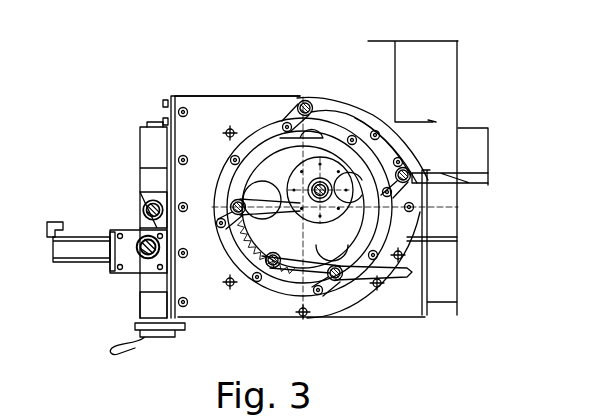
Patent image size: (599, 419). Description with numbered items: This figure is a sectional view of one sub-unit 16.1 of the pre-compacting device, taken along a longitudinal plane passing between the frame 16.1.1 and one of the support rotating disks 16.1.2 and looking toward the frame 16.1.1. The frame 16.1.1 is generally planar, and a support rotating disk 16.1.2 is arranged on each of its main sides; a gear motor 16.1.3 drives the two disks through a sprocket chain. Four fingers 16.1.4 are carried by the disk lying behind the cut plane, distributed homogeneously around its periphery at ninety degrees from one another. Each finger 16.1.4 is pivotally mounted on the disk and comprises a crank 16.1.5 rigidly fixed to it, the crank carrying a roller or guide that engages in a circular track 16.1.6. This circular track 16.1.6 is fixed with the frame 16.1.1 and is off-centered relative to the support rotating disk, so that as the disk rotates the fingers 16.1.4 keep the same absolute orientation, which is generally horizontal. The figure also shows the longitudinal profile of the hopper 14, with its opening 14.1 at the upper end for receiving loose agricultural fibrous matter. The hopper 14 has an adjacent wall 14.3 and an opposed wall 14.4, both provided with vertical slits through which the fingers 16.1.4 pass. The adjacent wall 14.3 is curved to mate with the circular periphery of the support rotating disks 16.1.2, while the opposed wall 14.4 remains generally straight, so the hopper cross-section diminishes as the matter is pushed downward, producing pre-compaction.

The hopper 14 is at (501, 53).
The opening 14.1 is at (427, 41).
The adjacent wall 14.3 is at (391, 79).
The opposed wall 14.4 is at (458, 62).
The sub-unit 16.1 is at (108, 81).
The frame 16.1.1 is at (220, 108).
The support rotating disk 16.1.2 is at (301, 96).
The gear motor 16.1.3 is at (95, 250).
The finger 16.1.4 is at (433, 122).
The crank 16.1.5 is at (415, 203).
The circular track 16.1.6 is at (402, 237).